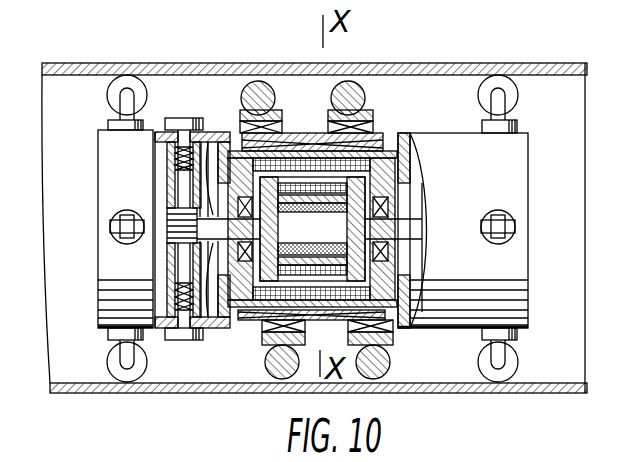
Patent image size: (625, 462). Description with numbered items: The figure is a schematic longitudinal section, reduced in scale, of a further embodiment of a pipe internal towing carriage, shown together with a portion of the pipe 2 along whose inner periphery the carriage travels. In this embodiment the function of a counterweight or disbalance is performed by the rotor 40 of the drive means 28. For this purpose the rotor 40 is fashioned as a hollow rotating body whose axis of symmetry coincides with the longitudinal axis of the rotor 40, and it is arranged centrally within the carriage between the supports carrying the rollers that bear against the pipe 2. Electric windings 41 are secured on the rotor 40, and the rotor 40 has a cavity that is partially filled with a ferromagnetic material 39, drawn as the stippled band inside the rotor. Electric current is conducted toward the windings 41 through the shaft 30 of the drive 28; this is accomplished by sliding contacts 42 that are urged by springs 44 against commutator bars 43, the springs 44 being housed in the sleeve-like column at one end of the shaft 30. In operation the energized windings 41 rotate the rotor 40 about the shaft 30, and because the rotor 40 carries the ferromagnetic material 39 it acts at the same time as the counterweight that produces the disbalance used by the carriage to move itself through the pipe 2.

The pipe 2 is at (523, 390).
The drive means 28 is at (240, 148).
The shaft 30 is at (197, 132).
The ferromagnetic material 39 is at (317, 253).
The rotor 40 is at (388, 153).
The electric windings 41 is at (298, 187).
The sliding contacts 42 is at (180, 270).
The commutator bars 43 is at (182, 216).
The compression spring 44 is at (182, 156).